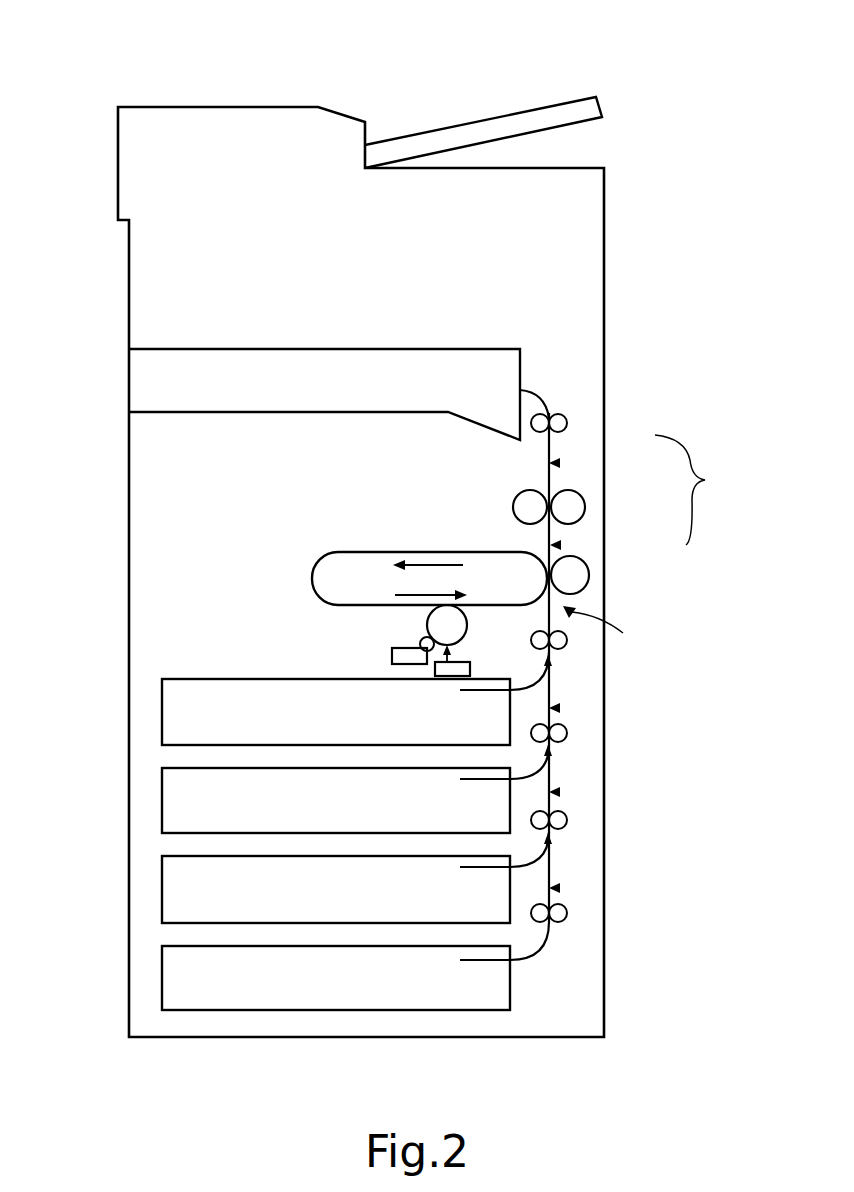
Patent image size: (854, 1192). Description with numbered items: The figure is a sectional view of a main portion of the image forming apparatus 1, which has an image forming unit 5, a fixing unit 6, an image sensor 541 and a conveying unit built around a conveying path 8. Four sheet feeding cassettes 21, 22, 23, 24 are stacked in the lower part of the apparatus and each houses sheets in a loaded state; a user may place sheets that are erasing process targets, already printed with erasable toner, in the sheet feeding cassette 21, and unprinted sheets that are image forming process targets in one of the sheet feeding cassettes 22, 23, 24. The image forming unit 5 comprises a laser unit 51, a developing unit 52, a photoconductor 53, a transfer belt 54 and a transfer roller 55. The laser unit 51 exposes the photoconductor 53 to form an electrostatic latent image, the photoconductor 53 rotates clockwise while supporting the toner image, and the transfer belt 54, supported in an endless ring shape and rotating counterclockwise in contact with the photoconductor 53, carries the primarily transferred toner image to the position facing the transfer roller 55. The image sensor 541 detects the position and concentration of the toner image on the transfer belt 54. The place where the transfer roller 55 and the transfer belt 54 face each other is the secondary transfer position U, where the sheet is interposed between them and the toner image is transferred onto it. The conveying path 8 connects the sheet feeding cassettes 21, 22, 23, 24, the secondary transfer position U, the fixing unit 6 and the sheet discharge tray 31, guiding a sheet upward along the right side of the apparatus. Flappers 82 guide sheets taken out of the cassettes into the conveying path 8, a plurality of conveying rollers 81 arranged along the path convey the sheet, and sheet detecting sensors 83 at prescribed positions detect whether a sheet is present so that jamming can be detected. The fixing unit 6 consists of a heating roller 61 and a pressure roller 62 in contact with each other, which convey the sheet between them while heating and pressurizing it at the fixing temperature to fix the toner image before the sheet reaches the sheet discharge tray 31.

The image forming apparatus 1 is at (183, 107).
The sheet discharge tray 31 is at (315, 412).
The conveying path 8 is at (528, 955).
The conveying rollers 81 is at (570, 422).
The flappers 82 is at (552, 857).
The sheet detecting sensors 83 is at (559, 463).
The fixing unit 6 is at (622, 490).
The heating roller 61 is at (538, 491).
The pressure roller 62 is at (585, 507).
The transfer roller 55 is at (590, 576).
The secondary transfer position U is at (602, 633).
The image forming unit 5 is at (314, 529).
The transfer belt 54 is at (390, 552).
The image sensor 541 is at (509, 606).
The photoconductor 53 is at (428, 620).
The developing unit 52 is at (392, 652).
The laser unit 51 is at (468, 667).
The sheet feeding cassette 21 is at (162, 710).
The sheet feeding cassette 22 is at (162, 797).
The sheet feeding cassette 23 is at (162, 887).
The sheet feeding cassette 24 is at (162, 973).